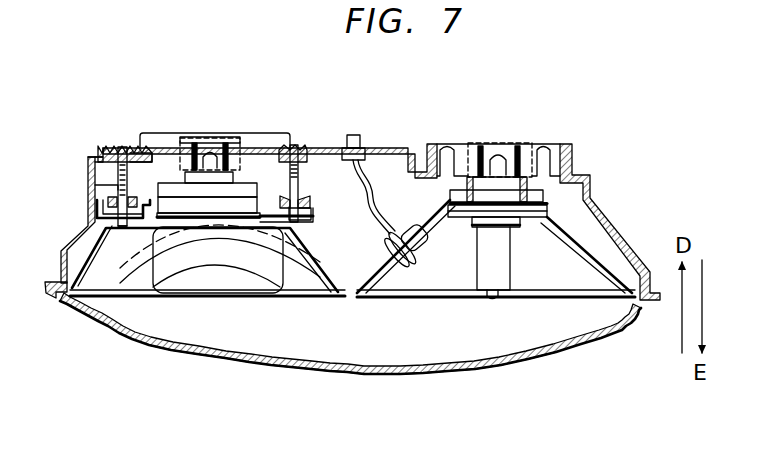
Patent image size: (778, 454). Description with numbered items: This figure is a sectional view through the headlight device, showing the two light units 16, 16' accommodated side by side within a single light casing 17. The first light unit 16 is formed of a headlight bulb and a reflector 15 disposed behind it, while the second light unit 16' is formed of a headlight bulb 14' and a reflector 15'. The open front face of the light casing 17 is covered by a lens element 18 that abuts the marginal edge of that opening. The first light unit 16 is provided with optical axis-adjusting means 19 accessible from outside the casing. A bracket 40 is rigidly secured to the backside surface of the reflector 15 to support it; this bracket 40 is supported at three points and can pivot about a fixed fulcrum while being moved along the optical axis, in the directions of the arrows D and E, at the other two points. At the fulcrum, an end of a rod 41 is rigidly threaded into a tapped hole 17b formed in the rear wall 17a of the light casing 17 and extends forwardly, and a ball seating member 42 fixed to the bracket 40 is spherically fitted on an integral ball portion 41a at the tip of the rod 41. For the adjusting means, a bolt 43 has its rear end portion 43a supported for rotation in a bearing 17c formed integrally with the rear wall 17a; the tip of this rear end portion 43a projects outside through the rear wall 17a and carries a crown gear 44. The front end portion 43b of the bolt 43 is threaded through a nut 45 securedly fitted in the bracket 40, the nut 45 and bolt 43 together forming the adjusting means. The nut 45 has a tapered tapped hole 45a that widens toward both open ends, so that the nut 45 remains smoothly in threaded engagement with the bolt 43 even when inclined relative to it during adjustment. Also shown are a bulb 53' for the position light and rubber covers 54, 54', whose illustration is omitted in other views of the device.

The headlight bulb 14' is at (511, 238).
The reflector 15 is at (207, 309).
The reflector 15' is at (496, 318).
The light unit 16 is at (205, 310).
The light unit 16' is at (494, 304).
The light casing 17 is at (584, 181).
The rear wall 17a is at (385, 148).
The tapped hole 17b is at (287, 143).
The bearing 17c is at (102, 150).
The lens element 18 is at (338, 377).
The optical axis-adjusting means 19 is at (112, 132).
The bracket 40 is at (100, 207).
The rod 41 is at (300, 190).
The ball portion 41a is at (300, 208).
The ball seating member 42 is at (317, 213).
The bolt 43 is at (106, 157).
The rear end portion 43a is at (136, 152).
The front end portion 43b is at (110, 228).
The crown gear 44 is at (124, 148).
The nut 45 is at (100, 215).
The tapered tapped hole 45a is at (115, 187).
The bulb for position light 53' is at (412, 215).
The rubber cover 54 is at (215, 152).
The rubber cover 54' is at (535, 134).